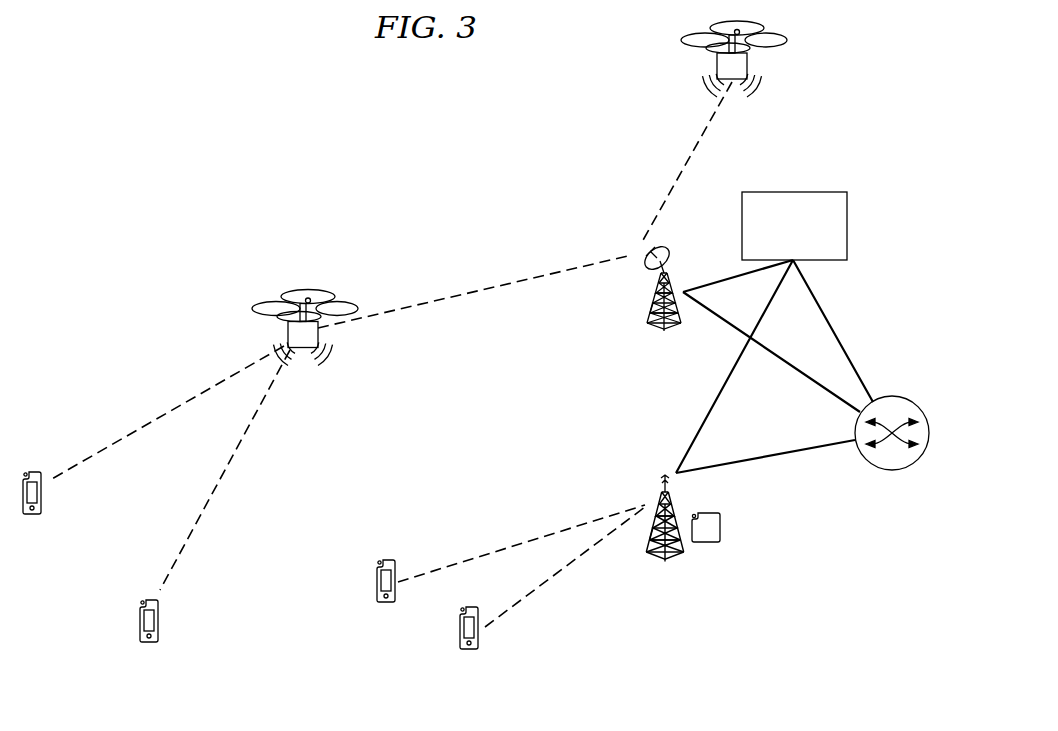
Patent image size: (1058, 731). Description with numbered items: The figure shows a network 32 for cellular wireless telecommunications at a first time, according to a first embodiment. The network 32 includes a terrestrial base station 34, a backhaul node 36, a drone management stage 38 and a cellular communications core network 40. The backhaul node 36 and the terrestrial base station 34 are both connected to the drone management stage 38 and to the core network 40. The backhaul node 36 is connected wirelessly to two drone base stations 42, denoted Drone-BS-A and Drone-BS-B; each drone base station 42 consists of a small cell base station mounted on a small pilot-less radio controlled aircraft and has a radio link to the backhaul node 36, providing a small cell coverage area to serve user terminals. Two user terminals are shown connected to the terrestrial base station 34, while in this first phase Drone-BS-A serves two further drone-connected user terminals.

The network 32 is at (397, 147).
The terrestrial base station 34 is at (640, 548).
The backhaul node 36 is at (653, 330).
The drone management stage 38 is at (847, 203).
The cellular communications core network 40 is at (892, 480).
The drone base station 42 is at (519, 225).